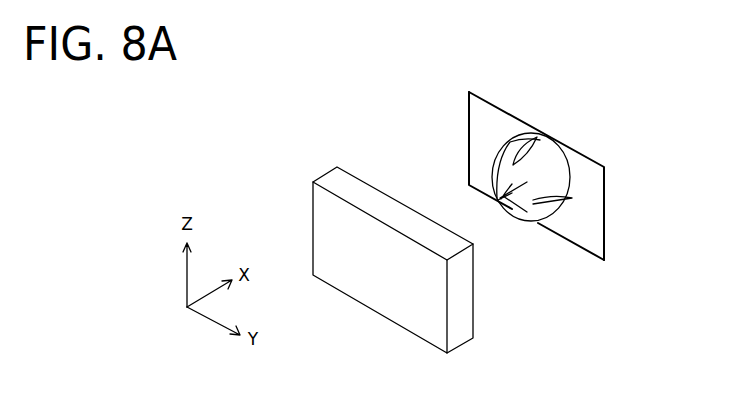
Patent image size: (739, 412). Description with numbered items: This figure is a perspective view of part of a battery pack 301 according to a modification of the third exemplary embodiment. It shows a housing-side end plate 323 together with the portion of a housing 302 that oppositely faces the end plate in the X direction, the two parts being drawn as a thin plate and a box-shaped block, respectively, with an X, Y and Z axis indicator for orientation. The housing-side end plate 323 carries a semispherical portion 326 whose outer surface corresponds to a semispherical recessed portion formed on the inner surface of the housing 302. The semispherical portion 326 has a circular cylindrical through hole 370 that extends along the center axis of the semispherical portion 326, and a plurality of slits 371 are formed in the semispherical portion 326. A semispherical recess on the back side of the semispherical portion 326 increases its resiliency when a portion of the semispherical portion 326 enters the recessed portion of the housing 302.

The battery pack 301 is at (575, 175).
The housing 302 is at (365, 182).
The housing-side end plate 323 is at (593, 212).
The semispherical portion 326 is at (561, 190).
The circular cylindrical through hole 370 is at (498, 200).
The slits 371 is at (515, 163).